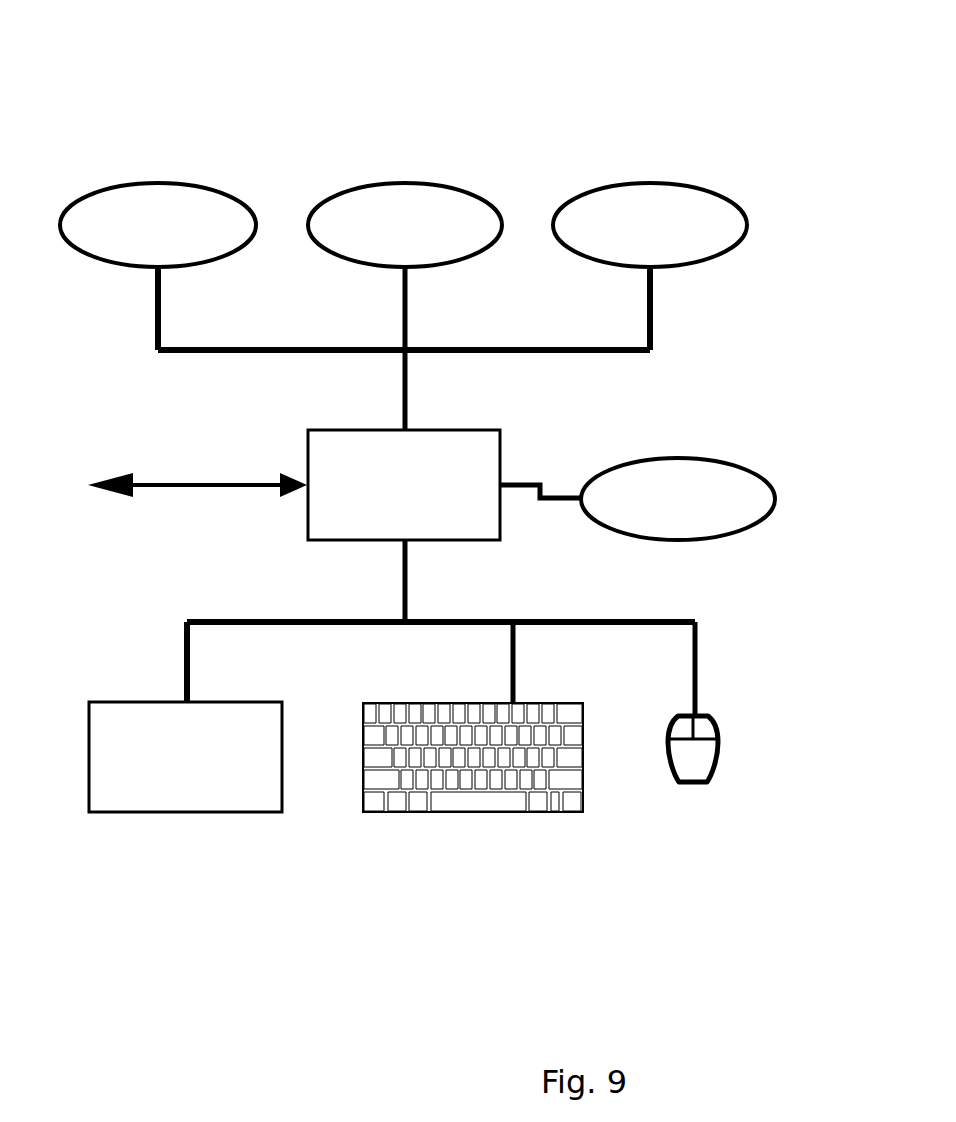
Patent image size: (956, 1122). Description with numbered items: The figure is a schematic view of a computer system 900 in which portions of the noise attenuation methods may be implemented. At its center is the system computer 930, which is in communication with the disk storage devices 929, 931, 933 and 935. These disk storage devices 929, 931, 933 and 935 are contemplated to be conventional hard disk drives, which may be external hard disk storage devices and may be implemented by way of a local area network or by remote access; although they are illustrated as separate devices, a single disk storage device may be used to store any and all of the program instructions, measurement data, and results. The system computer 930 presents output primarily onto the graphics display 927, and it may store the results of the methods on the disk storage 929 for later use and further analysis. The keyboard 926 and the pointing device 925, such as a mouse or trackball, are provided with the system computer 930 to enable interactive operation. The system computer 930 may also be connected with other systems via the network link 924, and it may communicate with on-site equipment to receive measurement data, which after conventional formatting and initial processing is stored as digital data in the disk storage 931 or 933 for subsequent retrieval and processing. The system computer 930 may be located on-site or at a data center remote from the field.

The computer system 900 is at (145, 81).
The network link 924 is at (118, 494).
The pointing device 925 is at (693, 785).
The keyboard 926 is at (500, 813).
The graphics display 927 is at (170, 812).
The disk storage device 929 is at (705, 458).
The system computer 930 is at (500, 458).
The disk storage device 931 is at (722, 193).
The disk storage device 933 is at (433, 186).
The disk storage device 935 is at (198, 186).